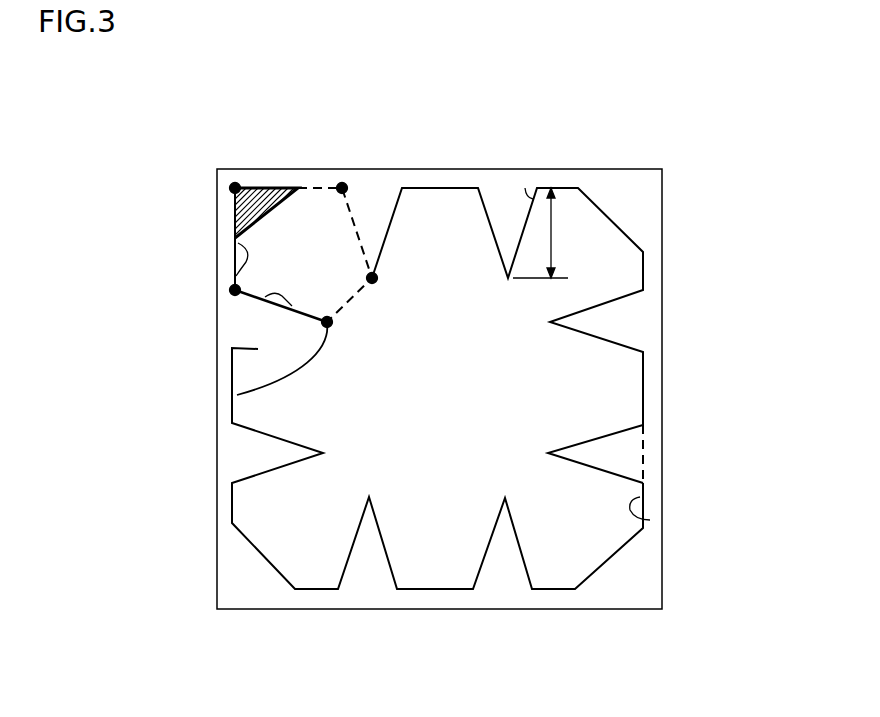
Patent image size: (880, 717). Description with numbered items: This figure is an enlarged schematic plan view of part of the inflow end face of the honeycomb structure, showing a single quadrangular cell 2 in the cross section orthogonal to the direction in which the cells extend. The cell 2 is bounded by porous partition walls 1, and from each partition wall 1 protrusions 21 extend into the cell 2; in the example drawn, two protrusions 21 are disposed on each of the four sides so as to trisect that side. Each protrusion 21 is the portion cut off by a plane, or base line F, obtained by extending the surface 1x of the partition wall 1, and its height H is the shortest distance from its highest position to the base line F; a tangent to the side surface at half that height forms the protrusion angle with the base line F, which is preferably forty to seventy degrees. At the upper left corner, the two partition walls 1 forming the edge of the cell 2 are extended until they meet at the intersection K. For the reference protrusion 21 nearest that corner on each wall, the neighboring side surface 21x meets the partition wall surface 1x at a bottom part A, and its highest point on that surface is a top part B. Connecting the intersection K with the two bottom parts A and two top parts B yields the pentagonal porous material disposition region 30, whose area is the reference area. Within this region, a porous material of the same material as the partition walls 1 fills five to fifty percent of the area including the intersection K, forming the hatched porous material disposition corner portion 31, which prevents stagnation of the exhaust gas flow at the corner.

The partition wall 1 is at (296, 178).
The surface of the partition wall 1x is at (238, 243).
The cell 2 is at (455, 512).
The protrusion 21 is at (382, 223).
The neighboring side surface 21x is at (265, 297).
The porous material disposition region 30 is at (313, 225).
The porous material disposition corner portion 31 is at (263, 200).
The intersection K is at (235, 186).
The bottom part A is at (344, 187).
The top part B is at (374, 278).
The base line F is at (504, 192).
The height of the protrusion H is at (544, 233).